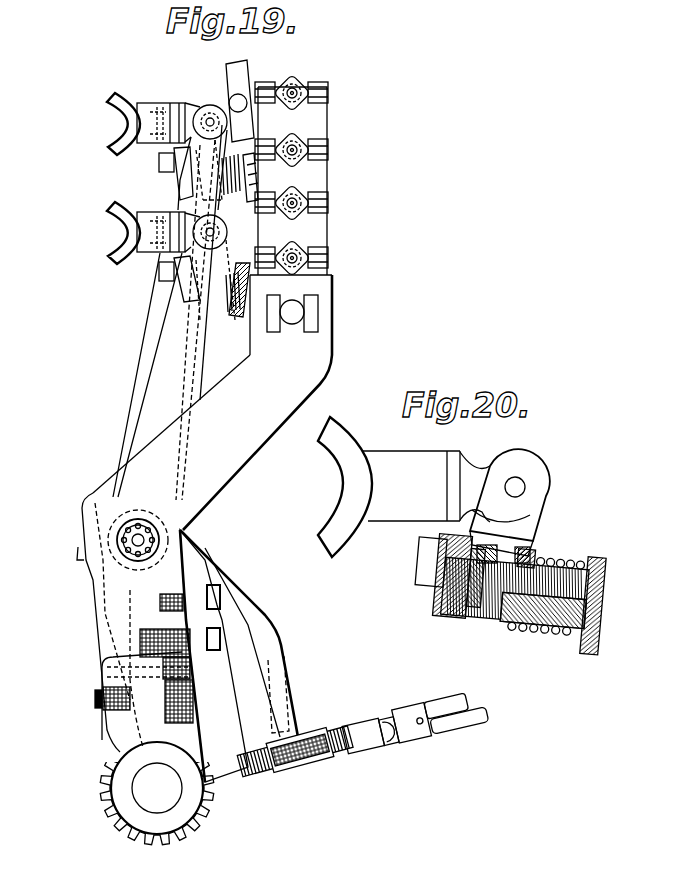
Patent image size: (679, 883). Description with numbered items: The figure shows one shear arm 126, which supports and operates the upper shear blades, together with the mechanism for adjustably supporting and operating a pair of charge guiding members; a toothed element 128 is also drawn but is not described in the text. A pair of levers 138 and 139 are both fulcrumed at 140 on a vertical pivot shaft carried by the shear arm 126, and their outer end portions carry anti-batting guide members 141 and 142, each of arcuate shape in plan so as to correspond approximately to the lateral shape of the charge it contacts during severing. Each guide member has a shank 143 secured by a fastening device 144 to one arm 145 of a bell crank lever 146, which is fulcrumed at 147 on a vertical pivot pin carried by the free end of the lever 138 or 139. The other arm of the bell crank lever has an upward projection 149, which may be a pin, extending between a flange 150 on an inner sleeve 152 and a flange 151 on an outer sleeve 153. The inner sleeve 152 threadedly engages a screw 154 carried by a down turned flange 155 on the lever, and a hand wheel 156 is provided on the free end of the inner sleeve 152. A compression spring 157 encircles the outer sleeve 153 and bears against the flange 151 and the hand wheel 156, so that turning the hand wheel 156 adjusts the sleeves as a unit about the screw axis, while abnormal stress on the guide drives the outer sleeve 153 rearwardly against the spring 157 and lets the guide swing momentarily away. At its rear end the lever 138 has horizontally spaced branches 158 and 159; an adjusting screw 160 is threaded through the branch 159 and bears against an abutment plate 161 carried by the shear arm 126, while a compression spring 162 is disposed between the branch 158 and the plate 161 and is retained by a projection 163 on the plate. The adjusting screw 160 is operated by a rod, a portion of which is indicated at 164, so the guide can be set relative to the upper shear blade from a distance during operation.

In FIG. 19, the shear arm 126 is at (297, 383).
In FIG. 19, the gear 128 is at (152, 795).
In FIG. 19, the lever 138 is at (172, 345).
In FIG. 20, the lever 138 is at (532, 512).
In FIG. 19, the lever 139 is at (152, 329).
In FIG. 19, the fulcrum 140 is at (142, 538).
In FIG. 19, the anti-batting guide member 141 is at (113, 247).
In FIG. 20, the anti-batting guide member 141 is at (348, 488).
In FIG. 19, the anti-batting guide member 142 is at (112, 138).
In FIG. 19, the shank 143 is at (147, 102).
In FIG. 20, the shank 143 is at (447, 444).
In FIG. 19, the fastening device 144 is at (173, 100).
In FIG. 19, the arm of bell crank lever 145 is at (180, 200).
In FIG. 20, the arm of bell crank lever 145 is at (473, 460).
In FIG. 20, the bell crank lever 146 is at (546, 468).
In FIG. 20, the fulcrum 147 is at (518, 488).
In FIG. 20, the upward projection 149 is at (487, 603).
In FIG. 20, the flange 150 is at (437, 618).
In FIG. 20, the flange 151 is at (510, 622).
In FIG. 20, the inner sleeve 152 is at (480, 526).
In FIG. 20, the outer sleeve 153 is at (530, 560).
In FIG. 20, the screw 154 is at (415, 570).
In FIG. 20, the down turned flange 155 is at (435, 600).
In FIG. 20, the hand wheel 156 is at (575, 648).
In FIG. 20, the compression spring 157 is at (543, 627).
In FIG. 19, the branch 158 is at (107, 637).
In FIG. 19, the branch 159 is at (282, 690).
In FIG. 19, the adjusting screw 160 is at (340, 745).
In FIG. 19, the abutment plate 161 is at (215, 700).
In FIG. 19, the compression spring 162 is at (158, 603).
In FIG. 19, the projection 163 is at (225, 603).
In FIG. 19, the operating rod 164 is at (445, 708).